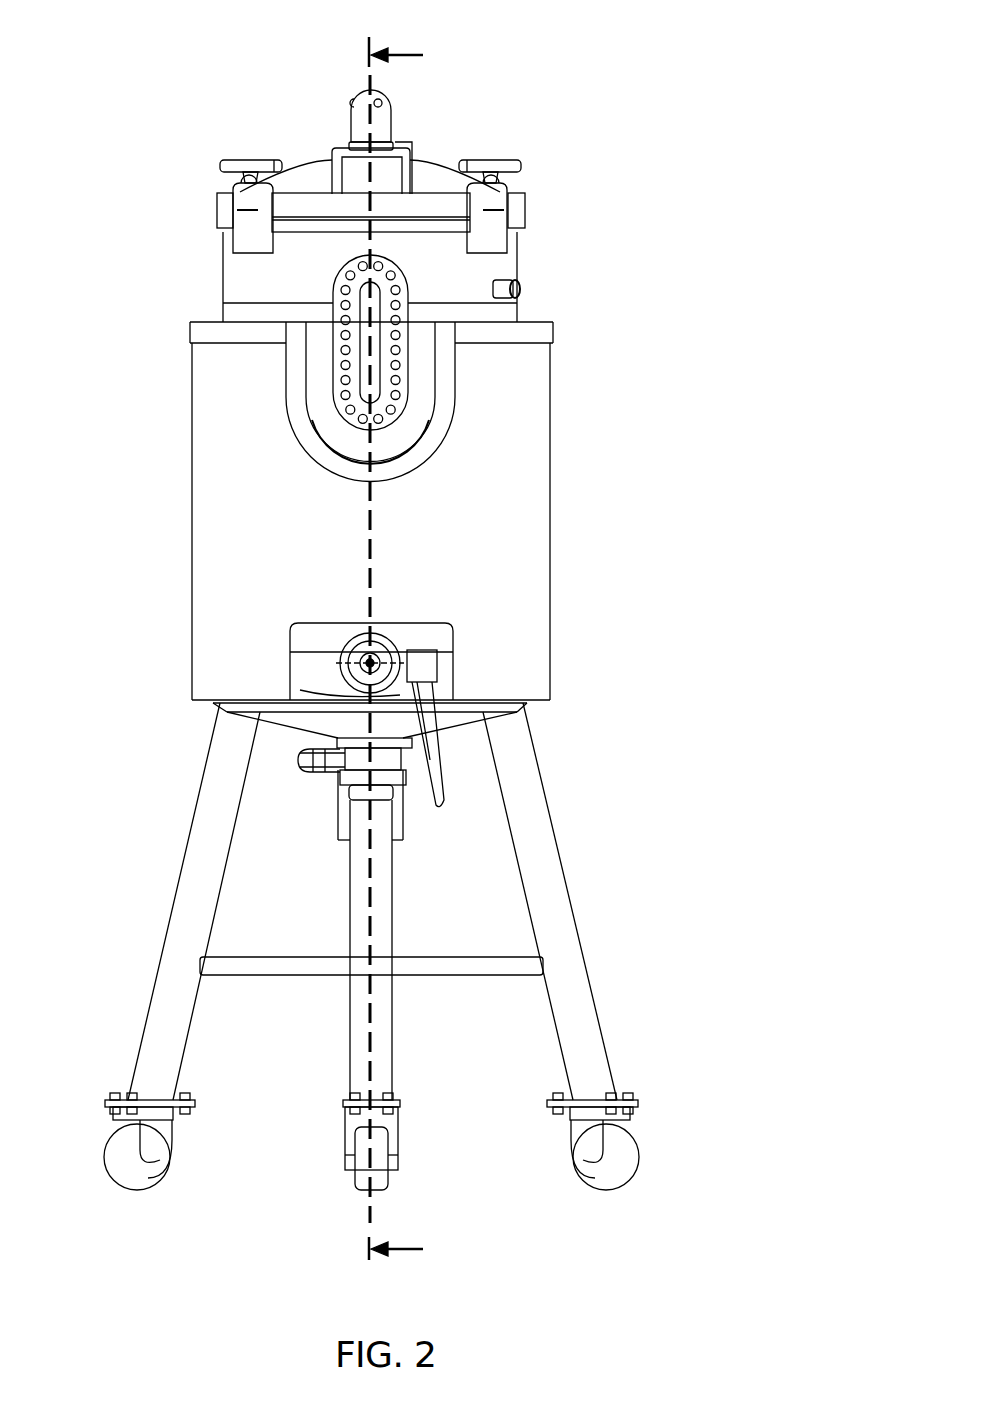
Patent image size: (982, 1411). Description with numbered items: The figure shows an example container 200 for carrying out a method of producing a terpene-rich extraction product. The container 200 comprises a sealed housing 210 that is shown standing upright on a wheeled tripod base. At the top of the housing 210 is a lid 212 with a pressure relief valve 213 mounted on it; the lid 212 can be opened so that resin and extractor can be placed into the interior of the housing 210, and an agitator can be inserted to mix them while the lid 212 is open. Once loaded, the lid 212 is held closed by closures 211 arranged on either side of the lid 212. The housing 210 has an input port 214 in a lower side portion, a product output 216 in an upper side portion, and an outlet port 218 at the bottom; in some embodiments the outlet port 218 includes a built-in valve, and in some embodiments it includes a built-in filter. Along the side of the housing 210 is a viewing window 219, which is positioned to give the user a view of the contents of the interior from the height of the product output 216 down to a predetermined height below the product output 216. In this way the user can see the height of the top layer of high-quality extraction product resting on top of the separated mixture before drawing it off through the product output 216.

The container 200 is at (714, 155).
The sealed housing 210 is at (197, 467).
The closures 211 is at (222, 168).
The lid 212 is at (303, 170).
The pressure relief valve 213 is at (352, 118).
The input port 214 is at (372, 661).
The product output 216 is at (520, 290).
The outlet port 218 is at (388, 794).
The viewing window 219 is at (362, 297).